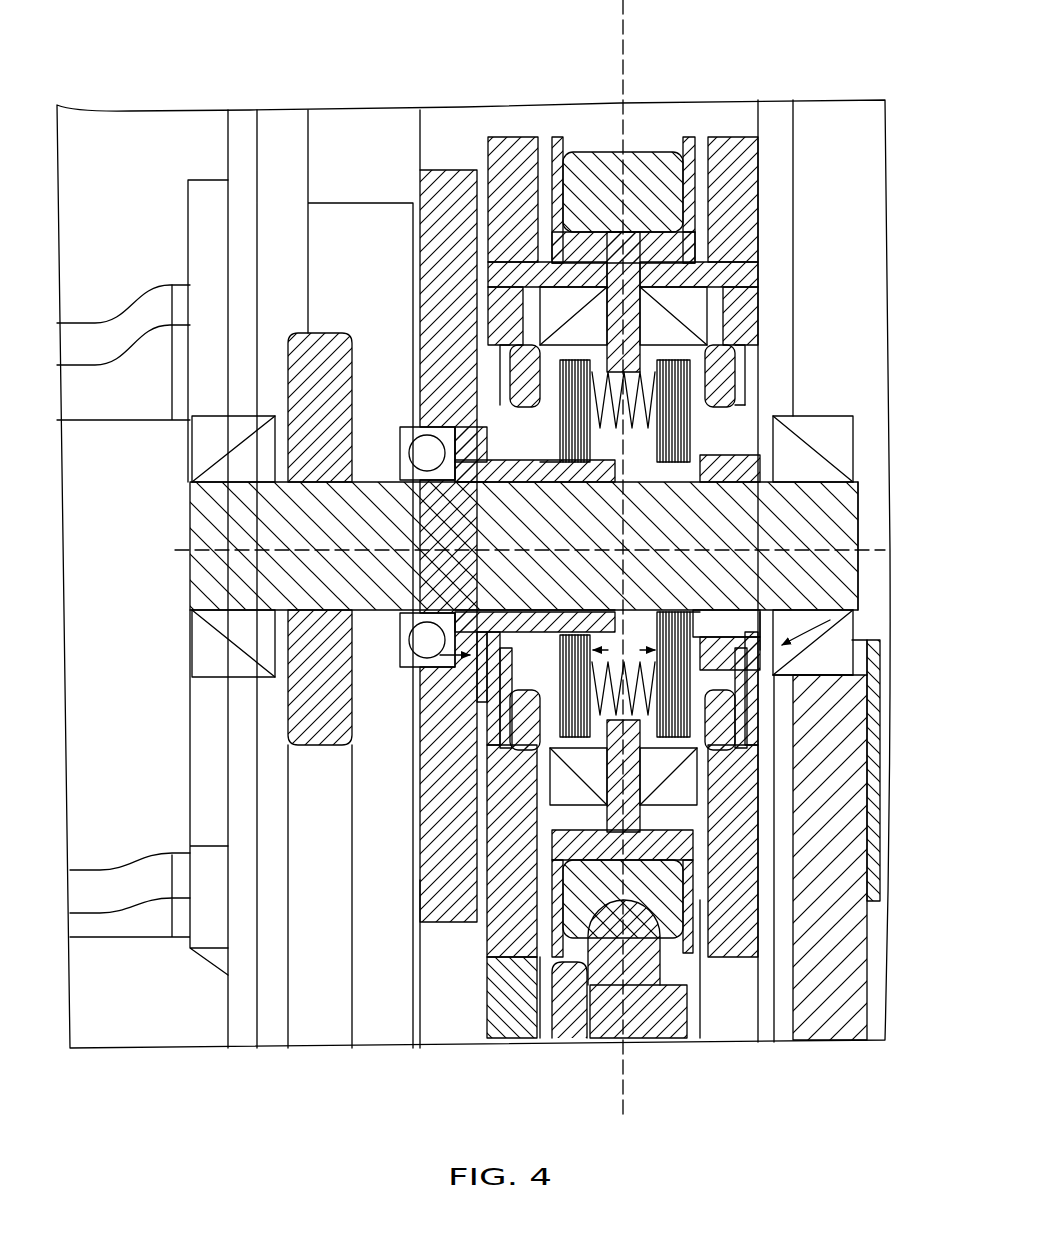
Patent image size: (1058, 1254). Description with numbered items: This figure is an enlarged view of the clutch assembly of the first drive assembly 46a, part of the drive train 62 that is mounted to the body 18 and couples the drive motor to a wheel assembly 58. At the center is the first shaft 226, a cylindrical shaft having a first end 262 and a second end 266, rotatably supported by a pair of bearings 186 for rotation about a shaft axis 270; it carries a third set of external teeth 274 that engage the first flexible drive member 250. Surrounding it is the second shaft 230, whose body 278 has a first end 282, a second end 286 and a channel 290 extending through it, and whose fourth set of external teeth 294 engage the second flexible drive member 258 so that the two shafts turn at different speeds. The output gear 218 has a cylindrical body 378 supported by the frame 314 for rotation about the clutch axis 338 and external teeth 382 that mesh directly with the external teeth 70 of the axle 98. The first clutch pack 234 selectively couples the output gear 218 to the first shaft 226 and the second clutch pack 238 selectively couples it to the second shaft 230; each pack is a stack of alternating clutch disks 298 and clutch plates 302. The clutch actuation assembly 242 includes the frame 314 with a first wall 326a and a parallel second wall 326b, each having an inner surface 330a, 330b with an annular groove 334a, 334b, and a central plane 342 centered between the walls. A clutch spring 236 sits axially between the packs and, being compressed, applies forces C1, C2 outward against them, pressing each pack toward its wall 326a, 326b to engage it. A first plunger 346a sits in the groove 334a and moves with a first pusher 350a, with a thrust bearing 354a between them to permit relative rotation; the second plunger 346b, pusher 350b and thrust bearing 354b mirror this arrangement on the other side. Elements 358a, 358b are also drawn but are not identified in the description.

The body 18 is at (776, 1040).
The first drive assembly 46a is at (282, 88).
The wheel assembly 58 is at (605, 1040).
The drive train 62 is at (225, 596).
The external teeth 70 is at (588, 880).
The axle 98 is at (648, 1040).
The bearing 186 is at (215, 651).
The output gear 218 is at (626, 155).
The first shaft 226 is at (225, 515).
The second shaft 230 is at (524, 470).
The first clutch pack 234 is at (660, 430).
The clutch spring 236 is at (870, 672).
The second clutch pack 238 is at (690, 405).
The clutch actuation assembly 242 is at (732, 375).
The first flexible drive member 250 is at (290, 970).
The second flexible drive member 258 is at (398, 1040).
The first end 262 is at (852, 516).
The second end 266 is at (225, 578).
The shaft axis 270 is at (530, 560).
The third set of external teeth 274 is at (176, 756).
The body 278 is at (578, 462).
The first end 282 is at (486, 488).
The second end 286 is at (620, 548).
The channel 290 is at (488, 492).
The fourth set of external teeth 294 is at (457, 110).
The clutch disks 298 is at (722, 468).
The clutch plates 302 is at (548, 352).
The frame 314 is at (765, 150).
The first wall 326a is at (735, 140).
The second wall 326b is at (512, 137).
The inner surface 330a is at (690, 140).
The inner surface 330b is at (566, 150).
The annular groove 334a is at (708, 400).
The annular groove 334b is at (505, 392).
The clutch axis 338 is at (740, 625).
The central plane 342 is at (692, 640).
The first plunger 346a is at (745, 770).
The second plunger 346b is at (505, 790).
The first pusher 350a is at (746, 728).
The second pusher 350b is at (512, 722).
The thrust bearing 354a is at (735, 722).
The thrust bearing 354b is at (520, 702).
The bearing 358a is at (693, 345).
The bearing 358b is at (553, 345).
The cylindrical body 378 is at (692, 245).
The external teeth 382 is at (580, 170).
The compressive force C1 is at (665, 440).
The compressive force C2 is at (588, 440).